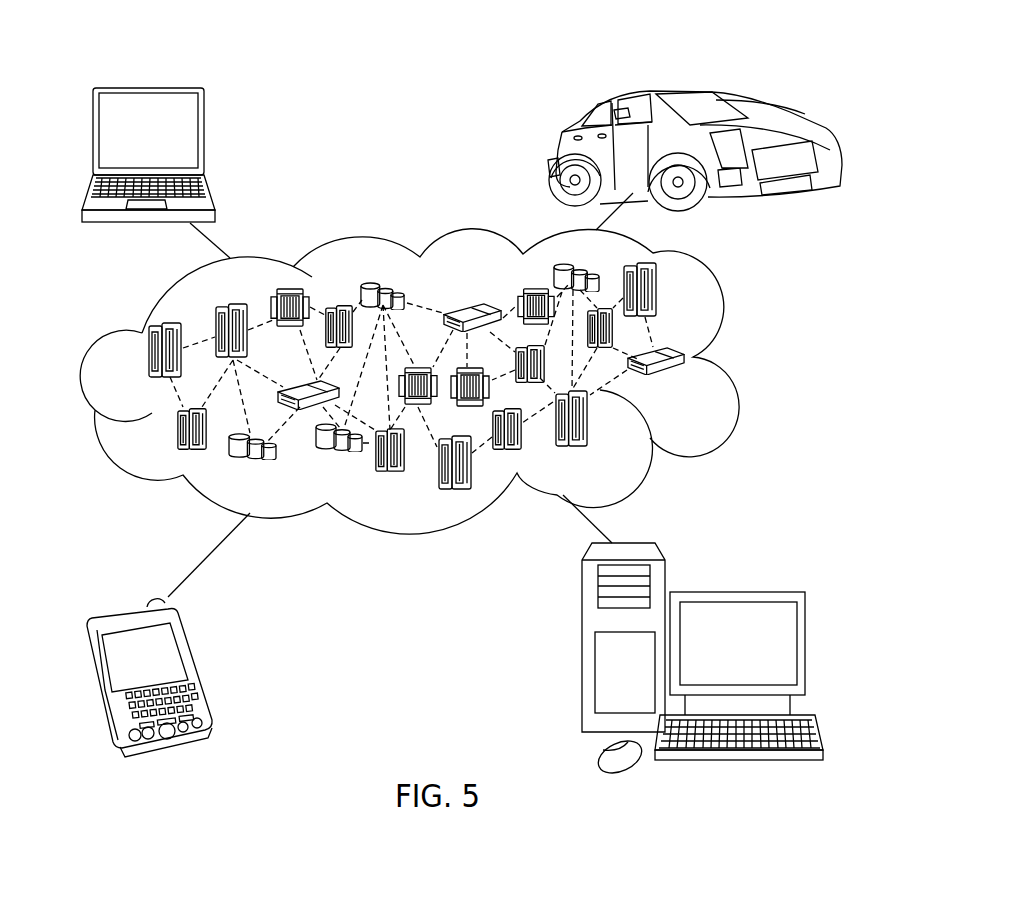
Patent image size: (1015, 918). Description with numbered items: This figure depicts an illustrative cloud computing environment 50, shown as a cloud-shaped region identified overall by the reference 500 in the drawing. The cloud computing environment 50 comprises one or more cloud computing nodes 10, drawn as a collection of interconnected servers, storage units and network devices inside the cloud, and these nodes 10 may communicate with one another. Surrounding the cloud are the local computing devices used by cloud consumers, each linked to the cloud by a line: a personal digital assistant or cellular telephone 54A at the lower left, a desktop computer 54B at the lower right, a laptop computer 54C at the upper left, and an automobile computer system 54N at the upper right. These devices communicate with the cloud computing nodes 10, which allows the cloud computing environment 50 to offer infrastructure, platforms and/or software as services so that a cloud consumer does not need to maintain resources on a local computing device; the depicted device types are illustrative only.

The cloud computing environment system 500 is at (895, 90).
The cloud computing environment 50 is at (737, 358).
The cloud computing nodes 10 is at (690, 391).
The personal digital assistant (PDA) or cellular telephone 54A is at (197, 668).
The desktop computer 54B is at (735, 592).
The laptop computer 54C is at (205, 138).
The automobile computer system 54N is at (560, 152).